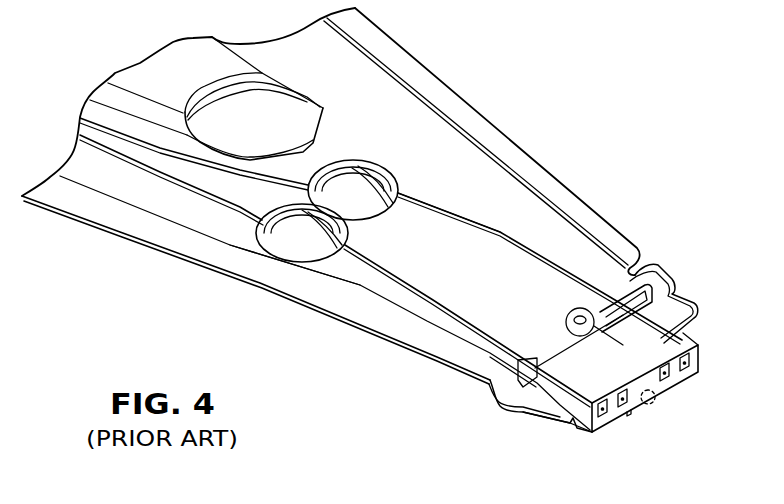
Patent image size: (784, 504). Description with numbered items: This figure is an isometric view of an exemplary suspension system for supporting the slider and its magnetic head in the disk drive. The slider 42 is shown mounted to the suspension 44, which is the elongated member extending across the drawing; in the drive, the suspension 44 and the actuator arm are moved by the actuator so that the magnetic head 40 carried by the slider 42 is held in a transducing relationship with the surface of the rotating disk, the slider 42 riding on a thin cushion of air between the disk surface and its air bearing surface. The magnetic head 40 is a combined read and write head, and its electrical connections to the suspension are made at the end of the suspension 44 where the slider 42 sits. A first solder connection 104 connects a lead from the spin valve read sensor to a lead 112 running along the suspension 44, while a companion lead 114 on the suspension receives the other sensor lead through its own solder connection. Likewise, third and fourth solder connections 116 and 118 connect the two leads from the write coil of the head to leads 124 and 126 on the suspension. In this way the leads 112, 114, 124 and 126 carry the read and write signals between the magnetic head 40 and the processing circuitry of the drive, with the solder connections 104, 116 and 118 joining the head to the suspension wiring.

The magnetic head 40 is at (657, 406).
The slider 42 is at (541, 419).
The suspension 44 is at (499, 130).
The first solder connection 104 is at (588, 433).
The lead 112 is at (373, 273).
The lead 114 is at (557, 262).
The third solder connection 116 is at (690, 362).
The fourth solder connection 118 is at (670, 382).
The lead 124 is at (420, 288).
The lead 126 is at (477, 225).